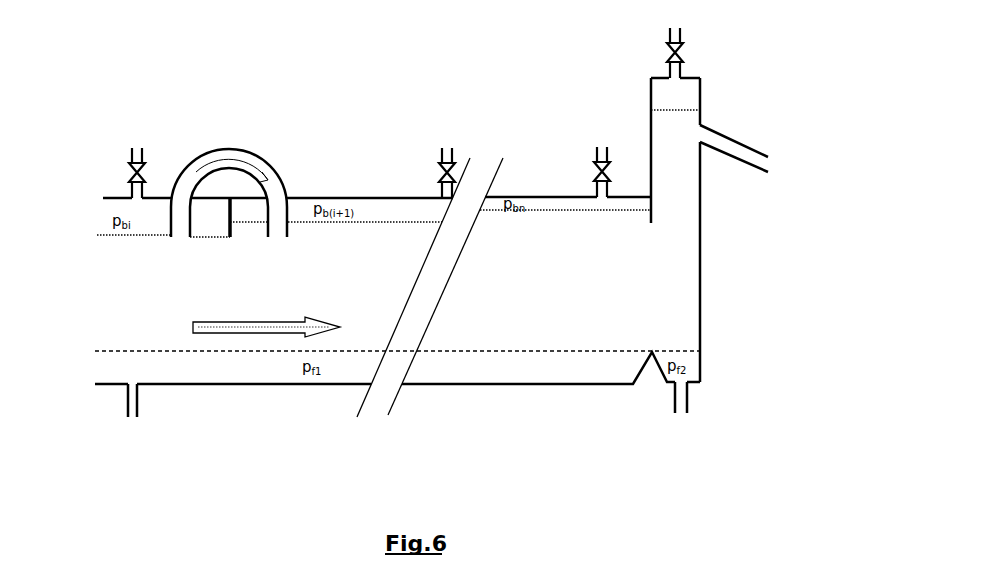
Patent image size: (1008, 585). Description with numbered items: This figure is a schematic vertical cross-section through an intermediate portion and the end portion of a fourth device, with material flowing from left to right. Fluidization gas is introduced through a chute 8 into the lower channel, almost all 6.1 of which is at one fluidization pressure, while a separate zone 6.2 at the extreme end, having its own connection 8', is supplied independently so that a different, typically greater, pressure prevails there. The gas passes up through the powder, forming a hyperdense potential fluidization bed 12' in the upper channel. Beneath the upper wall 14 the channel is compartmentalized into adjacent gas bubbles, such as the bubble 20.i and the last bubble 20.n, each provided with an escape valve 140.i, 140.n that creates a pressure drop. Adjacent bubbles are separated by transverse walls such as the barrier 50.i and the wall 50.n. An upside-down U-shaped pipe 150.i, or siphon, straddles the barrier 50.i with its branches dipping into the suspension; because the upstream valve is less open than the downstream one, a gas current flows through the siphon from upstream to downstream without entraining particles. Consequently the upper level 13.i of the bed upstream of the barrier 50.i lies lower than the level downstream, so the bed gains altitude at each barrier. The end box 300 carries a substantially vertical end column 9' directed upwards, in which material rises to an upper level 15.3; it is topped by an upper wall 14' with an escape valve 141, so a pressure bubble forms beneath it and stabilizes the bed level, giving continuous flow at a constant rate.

The bubble 20.i is at (112, 200).
The escape valve 140.i is at (150, 153).
The upside-down U-shaped pipe 150.i is at (262, 163).
The upper wall 14 is at (318, 174).
The upper level 13.i is at (143, 237).
The barrier 50.i is at (237, 237).
The bubble 20.n is at (575, 203).
The escape valve 140.n is at (602, 142).
The upper wall 14' is at (651, 56).
The escape valve 141 is at (699, 53).
The upper level 15.3 is at (682, 110).
The end column 9' is at (706, 230).
The transverse wall 50.n is at (652, 207).
The potential fluidization bed 12' is at (397, 314).
The zone of the lower channel 6.2 is at (690, 362).
The chute 8 is at (107, 403).
The lower channel 6.1 is at (223, 367).
The outlet connection 8' is at (668, 411).
The end box 300 is at (520, 402).